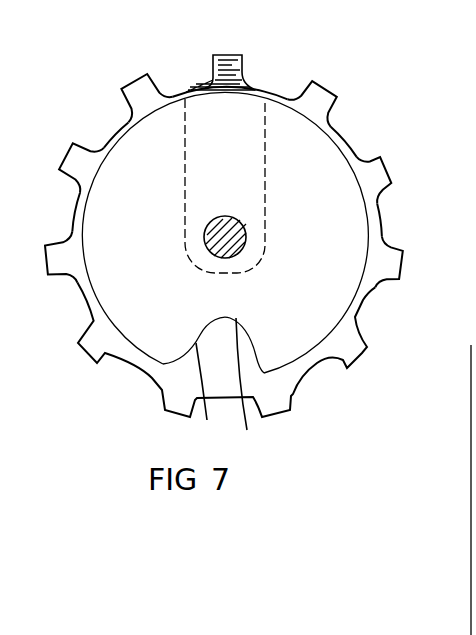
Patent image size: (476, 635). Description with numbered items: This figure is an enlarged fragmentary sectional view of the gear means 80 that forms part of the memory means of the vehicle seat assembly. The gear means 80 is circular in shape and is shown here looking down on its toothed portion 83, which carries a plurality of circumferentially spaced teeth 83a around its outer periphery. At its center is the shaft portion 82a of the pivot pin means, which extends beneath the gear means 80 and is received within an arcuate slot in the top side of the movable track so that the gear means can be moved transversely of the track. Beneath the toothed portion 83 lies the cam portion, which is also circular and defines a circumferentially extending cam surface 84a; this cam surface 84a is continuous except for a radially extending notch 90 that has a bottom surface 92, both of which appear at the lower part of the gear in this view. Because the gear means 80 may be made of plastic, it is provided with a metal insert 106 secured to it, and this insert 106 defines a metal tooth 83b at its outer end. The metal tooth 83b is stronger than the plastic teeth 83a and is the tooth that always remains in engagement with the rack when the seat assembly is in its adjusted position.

The gear means 80 is at (247, 251).
The shaft portion 82a is at (213, 247).
The toothed portion 83 is at (110, 134).
The teeth 83a is at (137, 84).
The metal tooth 83b is at (229, 55).
The cam surface 84a is at (357, 179).
The notch 90 is at (208, 395).
The bottom surface 92 is at (247, 387).
The metal insert 106 is at (246, 85).